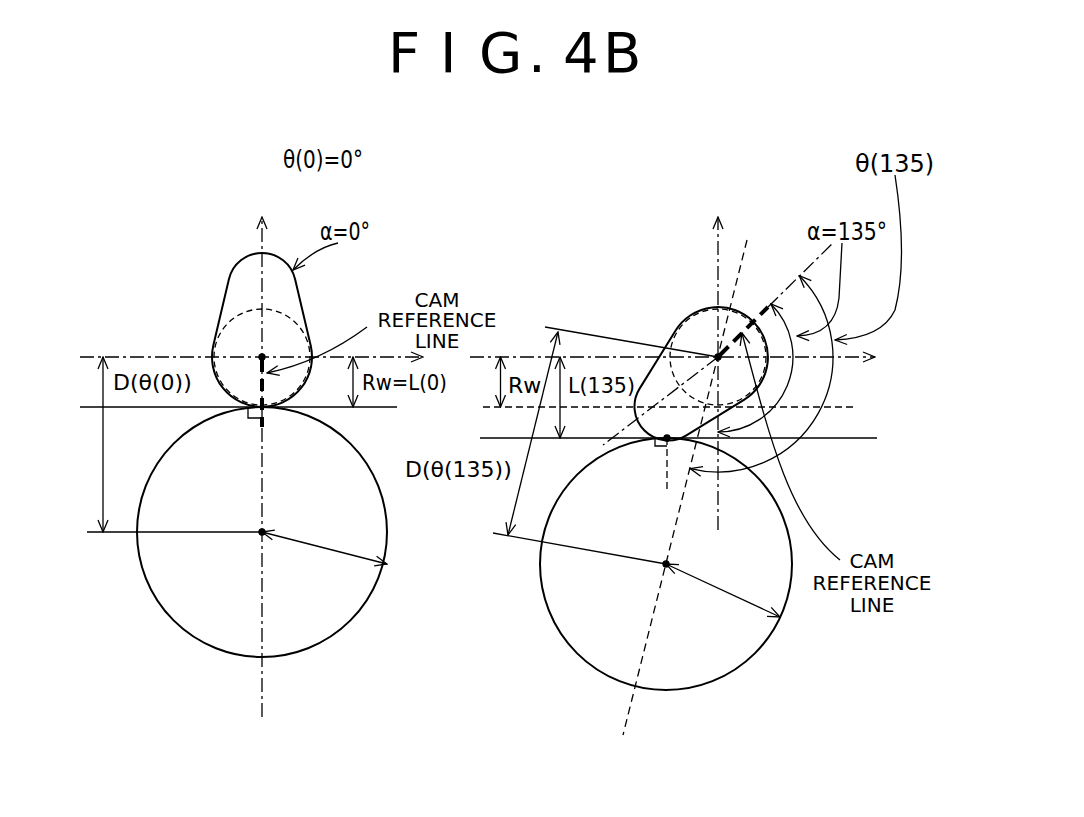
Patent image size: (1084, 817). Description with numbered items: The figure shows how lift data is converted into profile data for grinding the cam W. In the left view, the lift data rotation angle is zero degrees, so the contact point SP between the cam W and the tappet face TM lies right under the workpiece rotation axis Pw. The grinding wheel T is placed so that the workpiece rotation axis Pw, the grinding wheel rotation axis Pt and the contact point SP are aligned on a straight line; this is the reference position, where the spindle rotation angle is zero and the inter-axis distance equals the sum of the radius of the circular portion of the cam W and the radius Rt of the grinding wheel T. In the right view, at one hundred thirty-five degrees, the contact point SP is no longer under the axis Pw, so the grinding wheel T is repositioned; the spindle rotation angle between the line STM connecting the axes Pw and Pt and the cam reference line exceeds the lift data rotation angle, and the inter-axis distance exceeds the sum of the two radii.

The cam W is at (235, 268).
The contact point SP is at (260, 400).
The workpiece rotation axis Pw is at (267, 353).
The tappet face TM is at (155, 408).
The grinding wheel rotation axis Pt is at (262, 532).
The radius of the grinding wheel Rt is at (521, 566).
The grinding wheel T is at (338, 635).
The horizontal plane STM is at (265, 697).